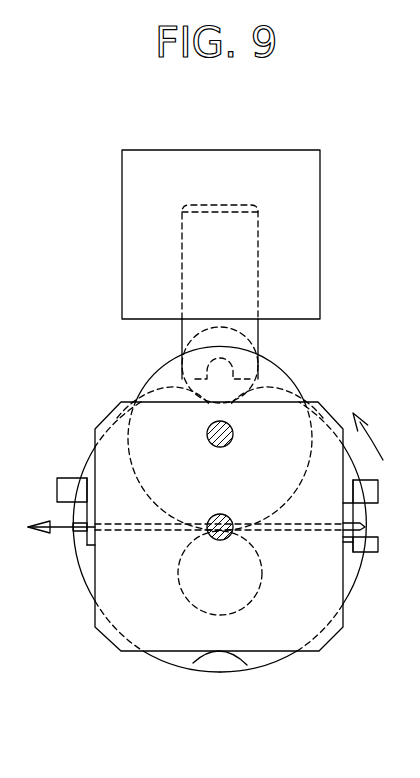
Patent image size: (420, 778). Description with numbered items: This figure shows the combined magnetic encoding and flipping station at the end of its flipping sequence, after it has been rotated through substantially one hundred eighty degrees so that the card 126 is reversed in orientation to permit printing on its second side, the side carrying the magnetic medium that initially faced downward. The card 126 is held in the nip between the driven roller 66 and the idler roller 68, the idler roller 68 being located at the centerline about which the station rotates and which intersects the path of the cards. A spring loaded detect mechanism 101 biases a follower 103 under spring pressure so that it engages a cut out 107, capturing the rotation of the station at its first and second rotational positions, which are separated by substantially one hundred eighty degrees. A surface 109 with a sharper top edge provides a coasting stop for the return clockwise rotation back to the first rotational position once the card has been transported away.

The spring loaded detect mechanism 101 is at (343, 217).
The follower 103 is at (258, 383).
The driven roller 66 is at (292, 373).
The idler roller 68 is at (258, 580).
The card 126 is at (72, 528).
The cut out 107 is at (197, 660).
The surface 109 is at (248, 668).